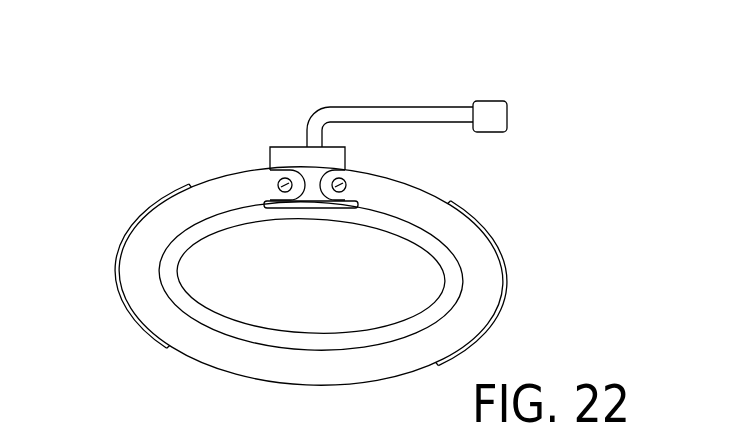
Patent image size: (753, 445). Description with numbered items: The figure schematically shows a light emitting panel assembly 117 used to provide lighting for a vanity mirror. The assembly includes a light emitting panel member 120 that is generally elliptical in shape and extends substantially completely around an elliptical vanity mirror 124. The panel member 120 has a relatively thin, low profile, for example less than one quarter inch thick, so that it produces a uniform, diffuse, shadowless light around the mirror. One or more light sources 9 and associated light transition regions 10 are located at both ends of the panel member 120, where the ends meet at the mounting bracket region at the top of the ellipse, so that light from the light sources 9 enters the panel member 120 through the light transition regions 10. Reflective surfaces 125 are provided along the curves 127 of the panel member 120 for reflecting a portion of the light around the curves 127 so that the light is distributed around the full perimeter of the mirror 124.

The light source 9 is at (286, 180).
The light transition region 10 is at (272, 186).
The light emitting panel assembly 117 is at (112, 282).
The light emitting panel member 120 is at (210, 190).
The elliptical vanity mirror 124 is at (403, 229).
The reflective surface 125 is at (140, 224).
The curve 127 is at (150, 305).